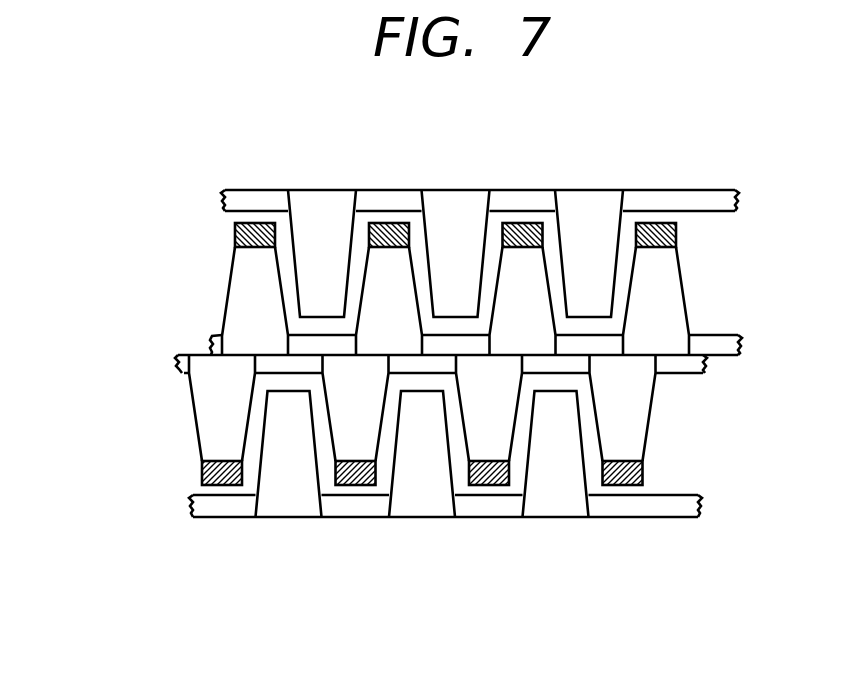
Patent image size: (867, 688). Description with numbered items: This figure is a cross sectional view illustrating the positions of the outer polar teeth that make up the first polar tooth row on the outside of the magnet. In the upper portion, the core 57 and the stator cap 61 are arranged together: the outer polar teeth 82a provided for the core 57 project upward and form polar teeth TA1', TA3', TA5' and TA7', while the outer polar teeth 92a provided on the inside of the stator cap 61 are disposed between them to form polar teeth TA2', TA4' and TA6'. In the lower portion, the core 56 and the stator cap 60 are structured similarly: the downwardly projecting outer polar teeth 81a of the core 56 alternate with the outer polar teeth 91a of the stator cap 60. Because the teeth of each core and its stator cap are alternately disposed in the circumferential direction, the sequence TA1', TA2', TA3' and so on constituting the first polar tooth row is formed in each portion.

The stator cap 61 is at (248, 190).
The stator cap 60 is at (223, 508).
The core 57 is at (725, 342).
The core 56 is at (688, 365).
The outer polar teeth 82a is at (410, 241).
The outer polar teeth 92a is at (489, 206).
The outer polar teeth 81a is at (380, 474).
The outer polar teeth 91a is at (453, 508).